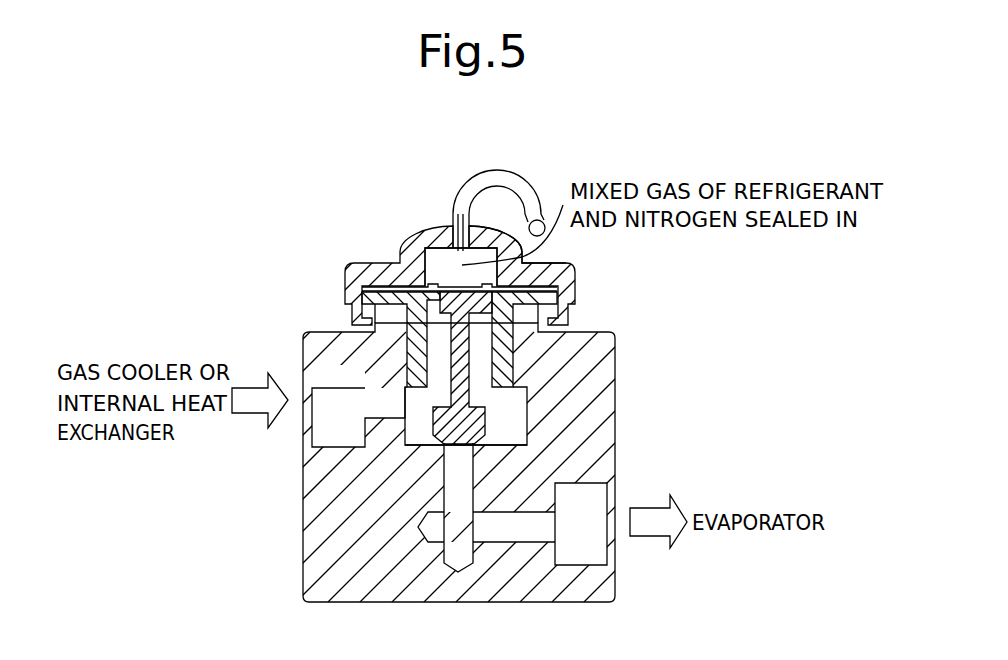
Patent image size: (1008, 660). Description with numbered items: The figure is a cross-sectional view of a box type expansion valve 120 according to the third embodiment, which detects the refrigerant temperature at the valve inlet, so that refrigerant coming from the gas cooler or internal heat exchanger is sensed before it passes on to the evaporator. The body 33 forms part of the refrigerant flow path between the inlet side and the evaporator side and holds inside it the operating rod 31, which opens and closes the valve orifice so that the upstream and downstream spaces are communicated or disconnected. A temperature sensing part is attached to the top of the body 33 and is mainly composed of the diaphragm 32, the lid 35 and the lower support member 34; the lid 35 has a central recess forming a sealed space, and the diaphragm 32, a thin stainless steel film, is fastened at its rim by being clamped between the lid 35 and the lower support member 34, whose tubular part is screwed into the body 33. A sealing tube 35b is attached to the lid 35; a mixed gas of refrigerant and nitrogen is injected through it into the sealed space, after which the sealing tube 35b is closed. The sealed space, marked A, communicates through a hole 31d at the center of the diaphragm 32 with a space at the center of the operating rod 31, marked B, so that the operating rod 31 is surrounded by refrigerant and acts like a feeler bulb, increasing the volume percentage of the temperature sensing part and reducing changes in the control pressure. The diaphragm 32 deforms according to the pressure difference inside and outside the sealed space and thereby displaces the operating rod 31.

The expansion valve 120 is at (294, 239).
The operating rod 31 is at (457, 350).
The hole 31d is at (556, 300).
The diaphragm 32 is at (525, 262).
The body 33 is at (584, 418).
The lower support member 34 is at (403, 306).
The lid 35 is at (413, 248).
The sealing tube 35b is at (489, 174).
The feeler bulb part A is at (455, 268).
The other parts B is at (455, 350).